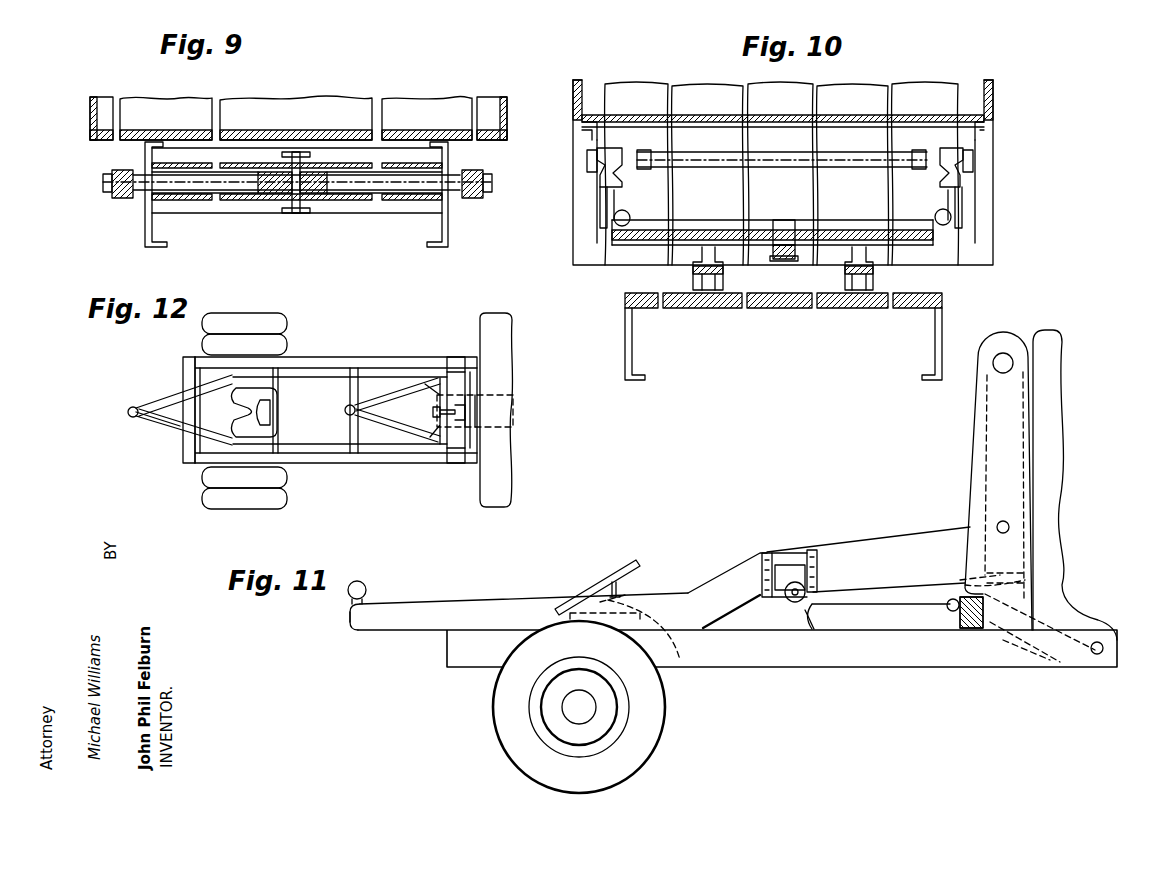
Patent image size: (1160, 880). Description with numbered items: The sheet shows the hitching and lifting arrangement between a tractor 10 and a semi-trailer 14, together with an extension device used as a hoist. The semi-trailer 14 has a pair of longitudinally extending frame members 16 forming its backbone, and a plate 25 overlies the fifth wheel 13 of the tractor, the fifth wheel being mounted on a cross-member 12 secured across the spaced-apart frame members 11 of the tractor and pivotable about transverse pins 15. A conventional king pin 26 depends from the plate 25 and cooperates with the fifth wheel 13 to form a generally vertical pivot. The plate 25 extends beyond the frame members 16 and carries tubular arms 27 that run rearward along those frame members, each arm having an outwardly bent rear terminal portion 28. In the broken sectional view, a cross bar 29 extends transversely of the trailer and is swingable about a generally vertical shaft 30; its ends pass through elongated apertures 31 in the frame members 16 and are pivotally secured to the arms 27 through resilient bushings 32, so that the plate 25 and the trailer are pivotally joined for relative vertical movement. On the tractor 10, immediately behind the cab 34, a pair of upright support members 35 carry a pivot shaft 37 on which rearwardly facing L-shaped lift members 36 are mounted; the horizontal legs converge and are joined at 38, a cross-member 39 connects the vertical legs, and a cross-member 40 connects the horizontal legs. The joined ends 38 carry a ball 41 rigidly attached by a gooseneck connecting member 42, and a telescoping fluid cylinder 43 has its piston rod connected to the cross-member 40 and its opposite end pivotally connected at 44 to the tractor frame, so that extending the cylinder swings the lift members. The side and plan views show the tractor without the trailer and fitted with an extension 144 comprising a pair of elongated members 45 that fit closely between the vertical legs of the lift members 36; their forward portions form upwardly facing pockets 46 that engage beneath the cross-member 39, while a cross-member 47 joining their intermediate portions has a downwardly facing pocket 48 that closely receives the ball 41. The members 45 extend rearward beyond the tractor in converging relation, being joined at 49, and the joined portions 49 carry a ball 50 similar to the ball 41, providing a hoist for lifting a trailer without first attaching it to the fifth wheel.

In FIG. 10, the tractor 10 is at (945, 317).
In FIG. 12, the tractor 10 is at (518, 405).
In FIG. 11, the tractor 10 is at (1070, 412).
In FIG. 10, the frame members 11 is at (632, 350).
In FIG. 12, the frame members 11 is at (400, 358).
In FIG. 11, the frame members 11 is at (882, 650).
In FIG. 10, the cross-member 12 is at (757, 309).
In FIG. 12, the cross-member 12 is at (233, 446).
In FIG. 11, the cross-member 12 is at (684, 672).
In FIG. 10, the fifth wheel 13 is at (928, 240).
In FIG. 12, the fifth wheel 13 is at (270, 408).
In FIG. 11, the fifth wheel 13 is at (607, 583).
In FIG. 9, the semi-trailer 14 is at (192, 96).
In FIG. 10, the semi-trailer 14 is at (684, 82).
In FIG. 10, the pins 15 is at (696, 276).
In FIG. 11, the pins 15 is at (620, 588).
In FIG. 9, the frame members 16 is at (146, 226).
In FIG. 10, the frame members 16 is at (592, 135).
In FIG. 10, the plate 25 is at (628, 240).
In FIG. 10, the king pin 26 is at (785, 258).
In FIG. 9, the arms 27 is at (118, 177).
In FIG. 10, the arms 27 is at (604, 203).
In FIG. 10, the rear terminal portion 28 is at (607, 167).
In FIG. 9, the cross bar 29 is at (250, 190).
In FIG. 10, the cross bar 29 is at (850, 150).
In FIG. 9, the shaft 30 is at (300, 187).
In FIG. 9, the apertures 31 is at (160, 195).
In FIG. 9, the resilient bushings 32 is at (124, 197).
In FIG. 12, the cab 34 is at (500, 338).
In FIG. 11, the cab 34 is at (1050, 368).
In FIG. 12, the upright support members 35 is at (458, 356).
In FIG. 11, the upright support members 35 is at (996, 420).
In FIG. 12, the lift members 36 is at (382, 415).
In FIG. 11, the lift members 36 is at (876, 597).
In FIG. 12, the pivot shaft 37 is at (470, 432).
In FIG. 11, the pivot shaft 37 is at (1006, 355).
In FIG. 12, the joined ends 38 is at (377, 392).
In FIG. 11, the joined ends 38 is at (817, 625).
In FIG. 11, the cross-member 39 is at (970, 520).
In FIG. 12, the cross-member 40 is at (433, 378).
In FIG. 11, the cross-member 40 is at (952, 612).
In FIG. 12, the ball 41 is at (352, 400).
In FIG. 11, the ball 41 is at (790, 602).
In FIG. 11, the gooseneck connecting member 42 is at (797, 604).
In FIG. 12, the fluid cylinder 43 is at (513, 411).
In FIG. 11, the fluid cylinder 43 is at (1004, 645).
In FIG. 11, the pivotal connection 44 is at (1098, 655).
In FIG. 12, the elongated members 45 is at (305, 443).
In FIG. 11, the elongated members 45 is at (720, 583).
In FIG. 11, the pockets 46 is at (1010, 527).
In FIG. 12, the cross-member 47 is at (353, 432).
In FIG. 11, the cross-member 47 is at (787, 555).
In FIG. 11, the pocket 48 is at (788, 583).
In FIG. 12, the joined portions 49 is at (138, 404).
In FIG. 11, the joined portions 49 is at (352, 628).
In FIG. 12, the ball 50 is at (128, 413).
In FIG. 11, the ball 50 is at (366, 588).
In FIG. 12, the extension 144 is at (142, 427).
In FIG. 11, the extension 144 is at (848, 548).